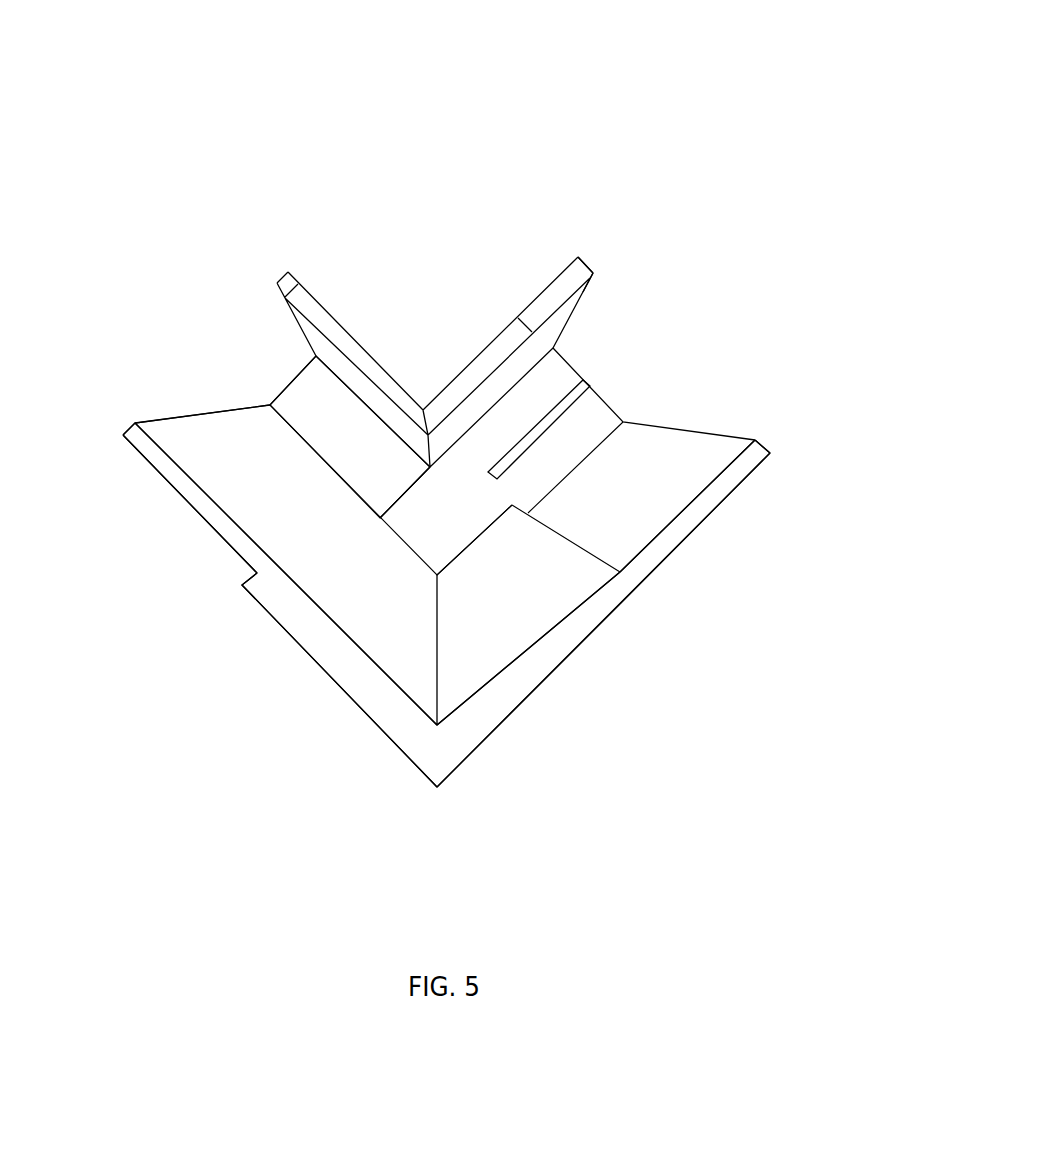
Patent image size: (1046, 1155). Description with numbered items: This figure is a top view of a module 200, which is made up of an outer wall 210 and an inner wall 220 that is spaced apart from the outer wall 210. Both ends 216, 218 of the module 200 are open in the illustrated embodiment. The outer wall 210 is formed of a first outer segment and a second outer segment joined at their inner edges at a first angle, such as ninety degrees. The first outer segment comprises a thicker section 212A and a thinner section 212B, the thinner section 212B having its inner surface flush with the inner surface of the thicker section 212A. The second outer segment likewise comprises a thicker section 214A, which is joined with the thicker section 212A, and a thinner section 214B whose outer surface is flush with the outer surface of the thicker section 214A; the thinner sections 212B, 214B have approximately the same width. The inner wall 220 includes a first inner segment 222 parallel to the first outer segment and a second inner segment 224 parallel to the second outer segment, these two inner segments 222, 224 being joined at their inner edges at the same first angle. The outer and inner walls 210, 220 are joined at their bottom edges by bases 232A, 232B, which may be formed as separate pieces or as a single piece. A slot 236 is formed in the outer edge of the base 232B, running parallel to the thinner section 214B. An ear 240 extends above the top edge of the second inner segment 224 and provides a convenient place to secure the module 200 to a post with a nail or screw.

The module 200 is at (629, 128).
The outer wall 210 is at (318, 708).
The thicker section of first outer segment 212A is at (270, 598).
The thinner section of first outer segment 212B is at (200, 508).
The thicker section of second outer segment 214A is at (522, 688).
The thinner section of second outer segment 214B is at (710, 518).
The end 216 is at (238, 320).
The end 218 is at (632, 341).
The inner wall 220 is at (486, 305).
The first inner segment 222 is at (320, 306).
The second inner segment 224 is at (485, 358).
The base 232A is at (350, 437).
The base 232B is at (446, 521).
The slot 236 is at (594, 378).
The ear 240 is at (568, 300).